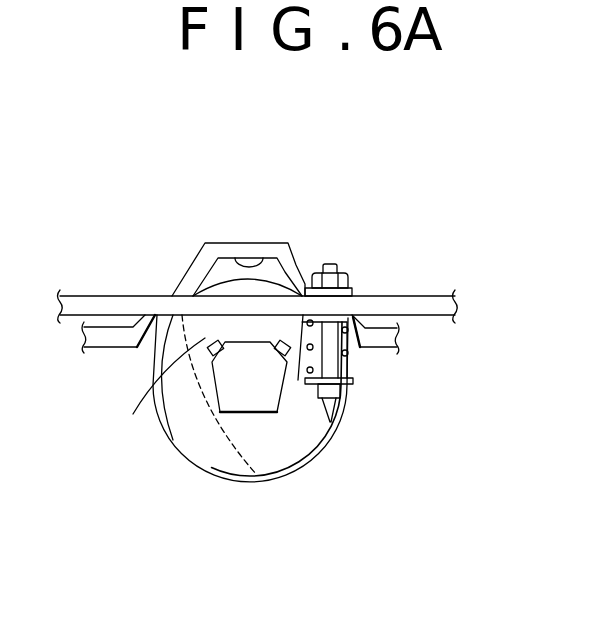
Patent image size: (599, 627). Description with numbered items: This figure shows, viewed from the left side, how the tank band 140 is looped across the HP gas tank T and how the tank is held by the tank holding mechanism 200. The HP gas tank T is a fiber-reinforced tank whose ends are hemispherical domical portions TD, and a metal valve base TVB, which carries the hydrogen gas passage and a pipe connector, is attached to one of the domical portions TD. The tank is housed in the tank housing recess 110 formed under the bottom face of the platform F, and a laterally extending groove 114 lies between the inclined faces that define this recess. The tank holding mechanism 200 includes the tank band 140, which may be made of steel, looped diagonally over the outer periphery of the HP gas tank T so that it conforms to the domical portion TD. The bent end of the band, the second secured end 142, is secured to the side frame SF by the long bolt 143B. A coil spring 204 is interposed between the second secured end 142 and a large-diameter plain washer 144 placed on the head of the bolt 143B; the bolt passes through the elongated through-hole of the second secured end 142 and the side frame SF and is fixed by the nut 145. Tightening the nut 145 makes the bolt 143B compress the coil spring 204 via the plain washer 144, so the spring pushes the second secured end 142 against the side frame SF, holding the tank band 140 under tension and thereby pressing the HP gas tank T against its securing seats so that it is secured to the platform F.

The groove 114 is at (293, 212).
The tank housing recess 110 is at (263, 207).
The platform F is at (237, 221).
The nut 145 is at (318, 272).
The plain washer 144 is at (345, 327).
The second secured end 142 is at (346, 318).
The side frame SF is at (447, 302).
The coil spring 204 is at (313, 348).
The HP gas tank T is at (143, 395).
The domical portion TD is at (156, 394).
The tank band 140 is at (192, 405).
The valve base TVB is at (238, 393).
The long bolt 143B is at (337, 414).
The tank holding mechanism 200 is at (449, 521).